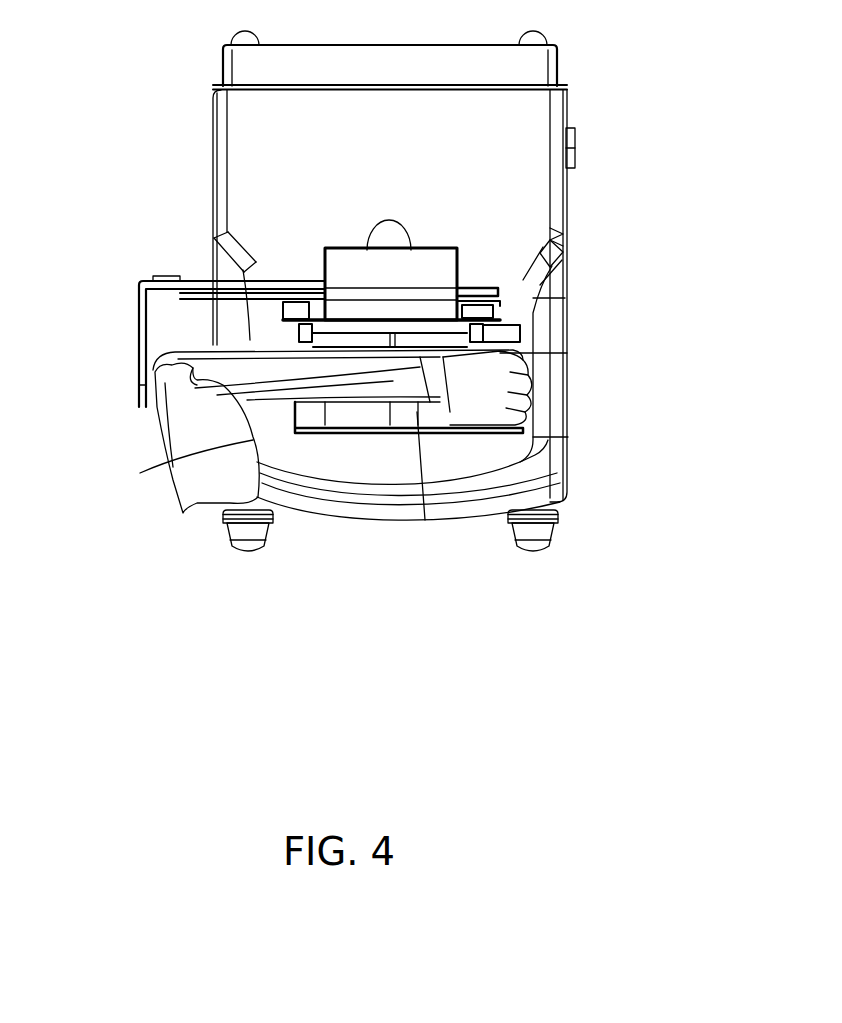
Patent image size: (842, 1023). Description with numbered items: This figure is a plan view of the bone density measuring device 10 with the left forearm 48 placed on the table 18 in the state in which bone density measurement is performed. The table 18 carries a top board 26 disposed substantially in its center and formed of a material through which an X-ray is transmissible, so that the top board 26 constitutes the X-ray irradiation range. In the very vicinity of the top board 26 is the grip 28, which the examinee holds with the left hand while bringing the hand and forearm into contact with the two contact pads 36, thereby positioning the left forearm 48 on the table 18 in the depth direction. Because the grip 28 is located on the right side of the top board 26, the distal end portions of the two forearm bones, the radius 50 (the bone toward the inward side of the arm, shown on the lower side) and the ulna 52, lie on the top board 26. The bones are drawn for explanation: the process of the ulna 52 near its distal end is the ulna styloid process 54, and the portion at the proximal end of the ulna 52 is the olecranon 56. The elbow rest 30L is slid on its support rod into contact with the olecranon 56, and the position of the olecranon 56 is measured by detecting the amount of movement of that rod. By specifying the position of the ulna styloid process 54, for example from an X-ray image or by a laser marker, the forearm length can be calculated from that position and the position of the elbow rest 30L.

The walking assist device 10 is at (607, 80).
The table 18 is at (540, 337).
The top board 26 is at (413, 503).
The grip 28 is at (533, 353).
The contact pads 36 is at (293, 277).
The elbow rest 30L is at (143, 313).
The left forearm 48 is at (267, 410).
The radius 50 is at (365, 365).
The ulna 52 is at (330, 365).
The ulna styloid process 54 is at (447, 422).
The olecranon 56 is at (143, 383).